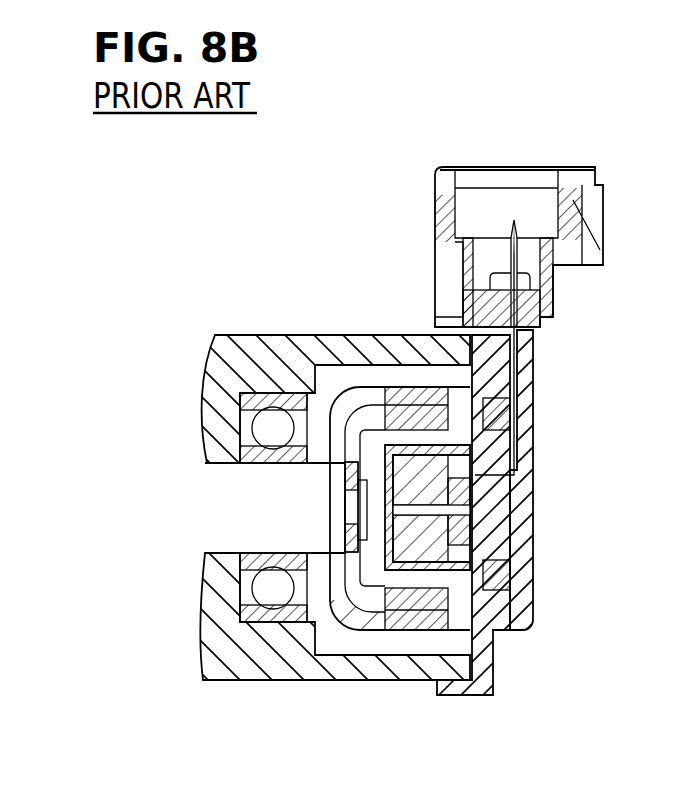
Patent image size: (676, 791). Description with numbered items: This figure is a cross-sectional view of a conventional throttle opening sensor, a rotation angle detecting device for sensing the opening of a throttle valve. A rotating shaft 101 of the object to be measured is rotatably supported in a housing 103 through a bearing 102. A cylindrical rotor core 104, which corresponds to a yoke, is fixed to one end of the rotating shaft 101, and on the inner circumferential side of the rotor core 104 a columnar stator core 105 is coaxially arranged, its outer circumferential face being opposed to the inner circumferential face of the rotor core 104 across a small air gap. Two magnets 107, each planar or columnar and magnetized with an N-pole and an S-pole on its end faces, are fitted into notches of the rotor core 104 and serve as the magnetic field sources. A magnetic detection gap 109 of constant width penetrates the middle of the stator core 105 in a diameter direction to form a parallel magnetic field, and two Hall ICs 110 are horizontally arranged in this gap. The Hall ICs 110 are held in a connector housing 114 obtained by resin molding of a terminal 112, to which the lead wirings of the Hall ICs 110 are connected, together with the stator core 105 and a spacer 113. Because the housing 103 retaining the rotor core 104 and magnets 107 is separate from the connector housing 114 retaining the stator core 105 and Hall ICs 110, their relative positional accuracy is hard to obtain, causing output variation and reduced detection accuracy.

The rotating shaft 101 is at (227, 527).
The bearing 102 is at (262, 430).
The housing 103 is at (268, 660).
The rotor core 104 is at (358, 620).
The stator core 105 is at (493, 400).
The magnet 107 is at (400, 390).
The magnetic detection gap 109 is at (390, 508).
The Hall IC 110 is at (478, 474).
The terminal 112 is at (515, 343).
The spacer 113 is at (480, 513).
The connector housing 114 is at (580, 222).